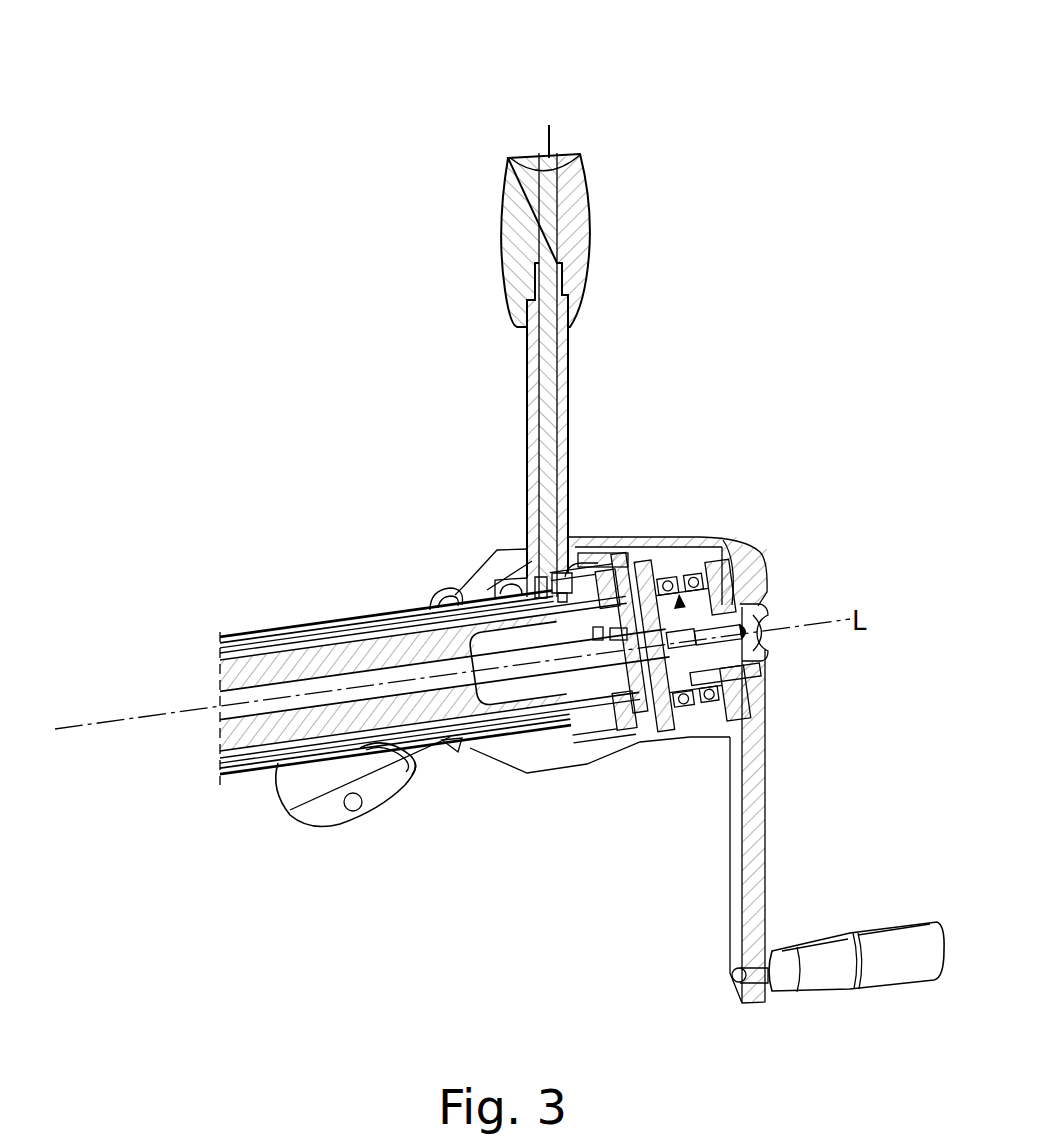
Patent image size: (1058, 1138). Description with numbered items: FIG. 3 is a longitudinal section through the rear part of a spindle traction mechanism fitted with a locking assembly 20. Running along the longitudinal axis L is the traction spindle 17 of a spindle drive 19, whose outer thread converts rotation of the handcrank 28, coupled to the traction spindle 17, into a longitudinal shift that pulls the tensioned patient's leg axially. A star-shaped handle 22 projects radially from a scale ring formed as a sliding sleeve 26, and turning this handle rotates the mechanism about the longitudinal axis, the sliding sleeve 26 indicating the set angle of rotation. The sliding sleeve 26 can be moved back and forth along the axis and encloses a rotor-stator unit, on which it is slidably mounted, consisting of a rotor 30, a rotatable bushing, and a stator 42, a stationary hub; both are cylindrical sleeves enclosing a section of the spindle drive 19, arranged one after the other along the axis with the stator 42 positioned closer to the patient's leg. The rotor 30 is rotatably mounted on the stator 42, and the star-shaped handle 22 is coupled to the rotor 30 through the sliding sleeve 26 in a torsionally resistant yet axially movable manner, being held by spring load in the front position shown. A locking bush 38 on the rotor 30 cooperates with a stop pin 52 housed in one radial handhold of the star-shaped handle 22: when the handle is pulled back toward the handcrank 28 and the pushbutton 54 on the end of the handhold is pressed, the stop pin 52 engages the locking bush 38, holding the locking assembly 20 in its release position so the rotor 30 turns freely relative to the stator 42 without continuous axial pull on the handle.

The traction spindle 17 is at (456, 705).
The spindle drive 19 is at (595, 685).
The locking assembly 20 is at (593, 502).
The star-shaped handle 22 is at (562, 333).
The scale ring / sliding sleeve 26 is at (493, 567).
The handcrank 28 is at (890, 938).
The rotor (rotatable bushing) 30 is at (620, 725).
The locking bush 38 is at (580, 553).
The stator (stationary hub) 42 is at (447, 594).
The stop pin 52 is at (553, 578).
The pushbutton 54 is at (551, 158).